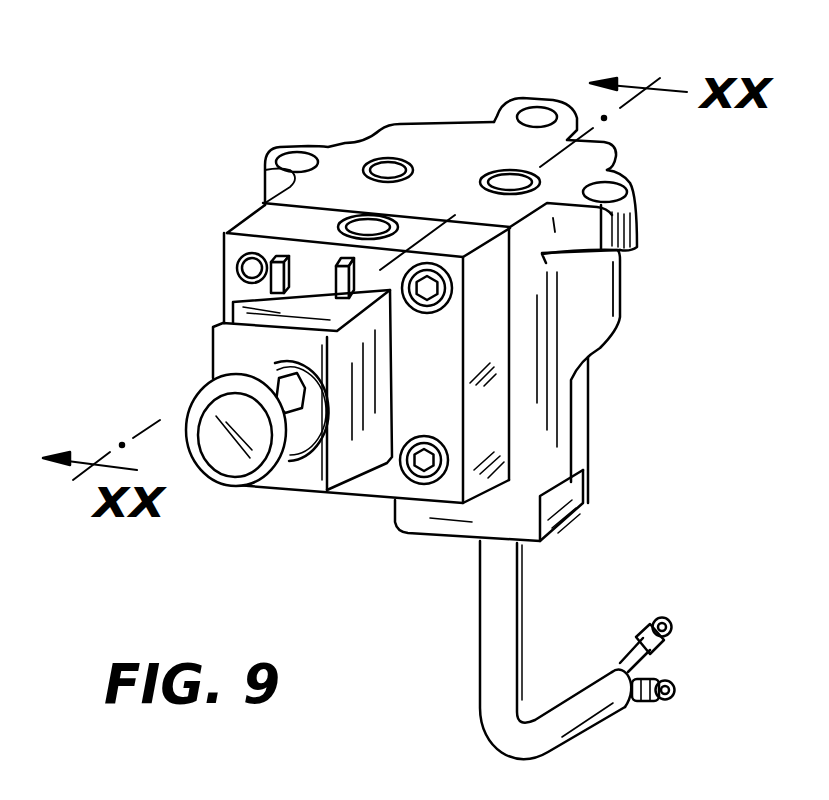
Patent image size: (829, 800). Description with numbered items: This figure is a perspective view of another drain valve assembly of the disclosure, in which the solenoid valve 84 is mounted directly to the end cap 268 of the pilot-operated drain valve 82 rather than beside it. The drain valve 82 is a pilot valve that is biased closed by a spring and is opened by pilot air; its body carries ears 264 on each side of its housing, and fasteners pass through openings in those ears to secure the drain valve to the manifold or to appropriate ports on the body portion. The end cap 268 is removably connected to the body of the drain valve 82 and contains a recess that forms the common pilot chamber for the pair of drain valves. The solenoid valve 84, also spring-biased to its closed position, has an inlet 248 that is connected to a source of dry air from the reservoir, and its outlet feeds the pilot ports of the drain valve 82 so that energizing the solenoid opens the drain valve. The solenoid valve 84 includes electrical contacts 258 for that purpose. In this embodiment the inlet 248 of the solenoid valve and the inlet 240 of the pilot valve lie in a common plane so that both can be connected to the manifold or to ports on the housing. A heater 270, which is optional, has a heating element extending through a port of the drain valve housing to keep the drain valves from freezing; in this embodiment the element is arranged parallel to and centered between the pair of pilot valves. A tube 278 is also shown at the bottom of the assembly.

The drain valve 82 is at (583, 318).
The solenoid valve 84 is at (304, 478).
The inlet 240 is at (495, 172).
The inlet 248 is at (358, 223).
The electrical contacts 258 is at (345, 318).
The ears 264 is at (633, 213).
The end cap 268 is at (258, 225).
The heater 270 is at (578, 490).
The tube 278 is at (500, 697).